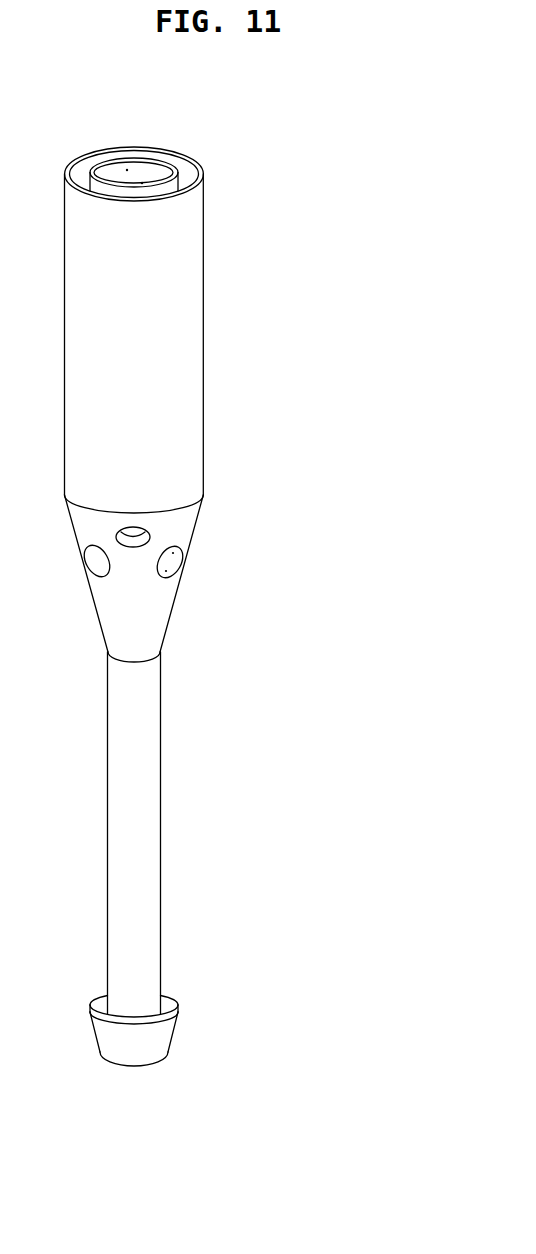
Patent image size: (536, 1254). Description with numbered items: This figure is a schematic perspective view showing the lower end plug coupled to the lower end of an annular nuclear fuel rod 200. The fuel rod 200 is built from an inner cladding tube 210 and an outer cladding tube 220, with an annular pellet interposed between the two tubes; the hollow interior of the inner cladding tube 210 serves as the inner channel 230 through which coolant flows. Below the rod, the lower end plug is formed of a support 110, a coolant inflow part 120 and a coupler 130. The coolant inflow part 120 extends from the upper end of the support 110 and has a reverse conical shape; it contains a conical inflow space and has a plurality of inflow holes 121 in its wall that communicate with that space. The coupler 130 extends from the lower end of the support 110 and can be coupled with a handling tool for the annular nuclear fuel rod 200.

The annular nuclear fuel rod 200 is at (219, 312).
The inner cladding tube 210 is at (183, 181).
The outer cladding tube 220 is at (143, 199).
The inner channel 230 is at (133, 178).
The support 110 is at (143, 763).
The coolant inflow part 120 is at (166, 578).
The inflow holes 121 is at (168, 562).
The coupler 130 is at (150, 1035).